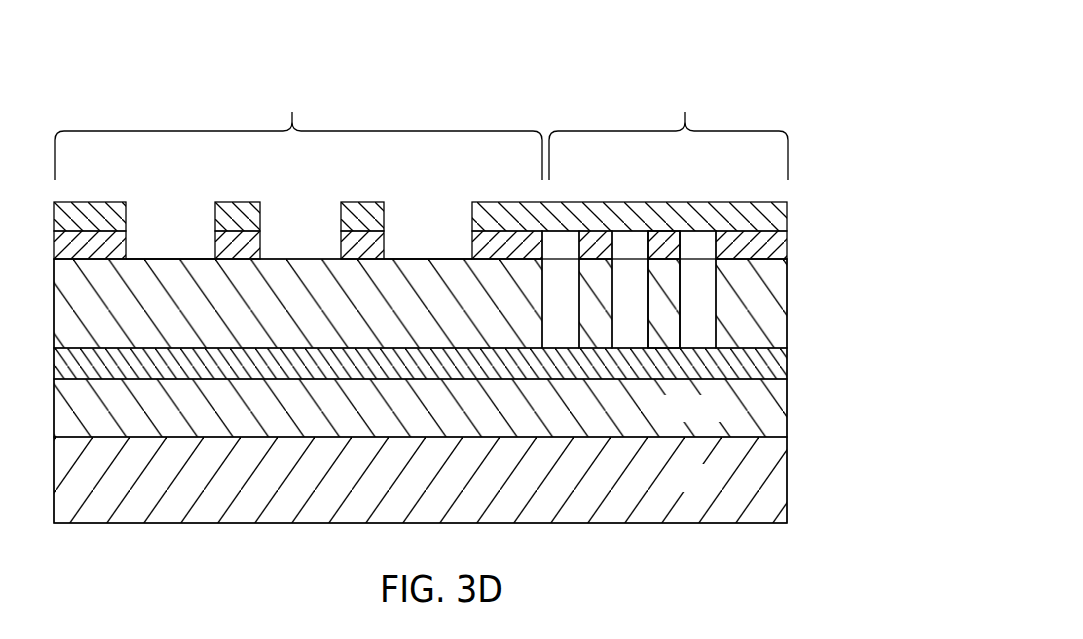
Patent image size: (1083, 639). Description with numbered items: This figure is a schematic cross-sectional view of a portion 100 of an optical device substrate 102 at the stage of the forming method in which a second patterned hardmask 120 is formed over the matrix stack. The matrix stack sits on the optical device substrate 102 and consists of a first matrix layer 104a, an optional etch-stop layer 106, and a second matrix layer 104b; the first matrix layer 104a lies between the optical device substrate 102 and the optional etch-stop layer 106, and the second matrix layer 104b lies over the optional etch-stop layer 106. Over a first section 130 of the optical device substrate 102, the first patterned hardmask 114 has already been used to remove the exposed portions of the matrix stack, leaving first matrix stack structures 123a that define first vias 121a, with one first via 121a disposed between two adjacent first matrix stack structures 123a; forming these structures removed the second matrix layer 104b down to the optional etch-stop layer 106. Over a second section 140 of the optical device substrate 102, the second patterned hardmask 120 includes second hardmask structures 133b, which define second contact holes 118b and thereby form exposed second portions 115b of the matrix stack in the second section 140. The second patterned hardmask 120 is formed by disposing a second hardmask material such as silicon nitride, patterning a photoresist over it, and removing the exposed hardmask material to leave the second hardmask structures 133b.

The portion of optical device substrate 100 is at (795, 40).
The optical device substrate 102 is at (708, 488).
The first matrix layer 104a is at (718, 418).
The second matrix layer 104b is at (770, 290).
The optional etch-stop layer 106 is at (770, 360).
The first patterned hardmask 114 is at (772, 243).
The exposed second portions of the matrix stack 115b is at (430, 262).
The second contact holes 118b is at (168, 233).
The second patterned hardmask 120 is at (772, 213).
The first vias 121a is at (700, 275).
The first matrix stack structures 123a is at (662, 280).
The first section 130 is at (668, 130).
The second hardmask structures 133b is at (371, 232).
The second section 140 is at (298, 129).